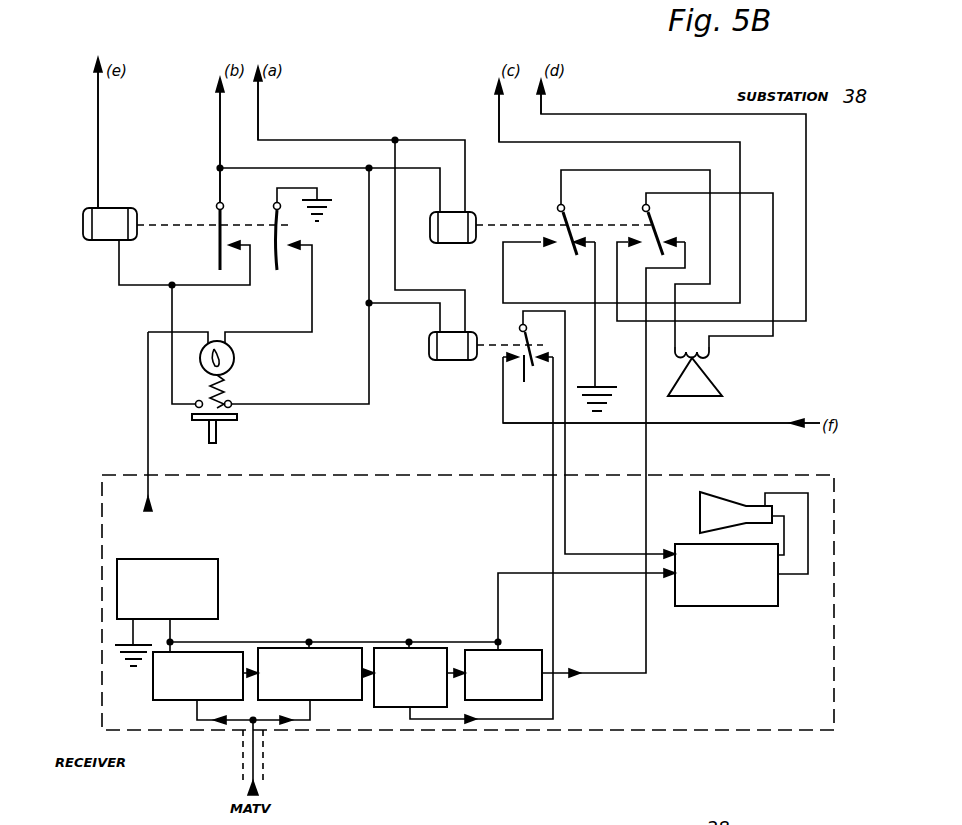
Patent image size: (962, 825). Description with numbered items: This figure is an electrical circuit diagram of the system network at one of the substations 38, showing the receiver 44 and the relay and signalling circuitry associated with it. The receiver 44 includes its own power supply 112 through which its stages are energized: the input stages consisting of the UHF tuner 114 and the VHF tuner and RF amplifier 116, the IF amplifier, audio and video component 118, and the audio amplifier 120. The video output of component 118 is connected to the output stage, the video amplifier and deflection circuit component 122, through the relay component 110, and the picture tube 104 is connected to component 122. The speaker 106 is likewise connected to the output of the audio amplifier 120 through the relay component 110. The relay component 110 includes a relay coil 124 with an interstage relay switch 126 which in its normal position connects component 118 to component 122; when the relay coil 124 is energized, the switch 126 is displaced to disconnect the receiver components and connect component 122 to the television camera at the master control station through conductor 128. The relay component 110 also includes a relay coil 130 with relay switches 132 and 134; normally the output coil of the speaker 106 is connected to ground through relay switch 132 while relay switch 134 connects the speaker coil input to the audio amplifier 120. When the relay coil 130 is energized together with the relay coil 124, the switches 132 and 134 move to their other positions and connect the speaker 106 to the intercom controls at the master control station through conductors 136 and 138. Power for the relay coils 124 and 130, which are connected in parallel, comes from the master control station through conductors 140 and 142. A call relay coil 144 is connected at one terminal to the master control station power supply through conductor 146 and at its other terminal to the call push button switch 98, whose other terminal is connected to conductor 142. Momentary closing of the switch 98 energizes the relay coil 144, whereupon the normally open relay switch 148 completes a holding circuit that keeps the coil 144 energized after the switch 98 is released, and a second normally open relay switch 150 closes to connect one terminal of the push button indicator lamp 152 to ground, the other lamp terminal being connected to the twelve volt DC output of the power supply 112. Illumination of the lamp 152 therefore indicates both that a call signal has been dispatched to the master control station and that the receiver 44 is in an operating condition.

The substation 38 is at (116, 337).
The receiver 44 is at (200, 737).
The call push button switch 98 is at (200, 426).
The cathode ray picture tube 104 is at (722, 505).
The audio speaker 106 is at (726, 373).
The relay component 110 is at (487, 157).
The power supply 112 is at (213, 577).
The UHF tuner 114 is at (160, 669).
The VHF tuner and RF amplifier 116 is at (330, 696).
The IF amplifier, audio and video component 118 is at (378, 703).
The audio amplifier 120 is at (516, 648).
The video amplifier and deflection circuit component 122 is at (745, 607).
The relay coil 124 is at (453, 342).
The interstage relay switch 126 is at (530, 368).
The conductor 128 is at (736, 423).
The relay coil 130 is at (457, 230).
The relay switch 132 is at (571, 215).
The relay switch 134 is at (656, 222).
The conductor 136 is at (497, 90).
The conductor 138 is at (548, 93).
The conductor 140 is at (282, 95).
The conductor 142 is at (220, 112).
The call relay coil 144 is at (118, 221).
The conductor 146 is at (98, 148).
The relay switch 148 is at (218, 240).
The relay switch 150 is at (278, 255).
The push button indicator lamp 152 is at (235, 358).